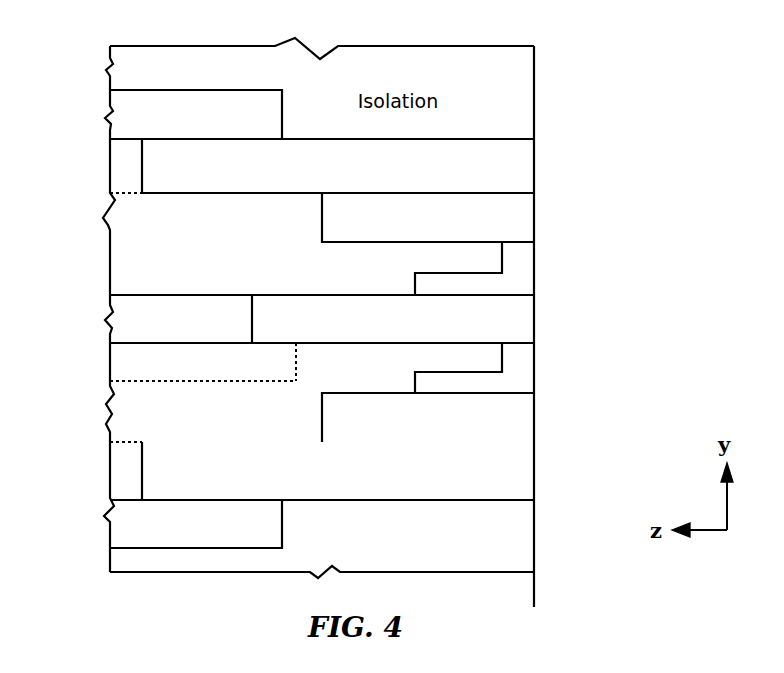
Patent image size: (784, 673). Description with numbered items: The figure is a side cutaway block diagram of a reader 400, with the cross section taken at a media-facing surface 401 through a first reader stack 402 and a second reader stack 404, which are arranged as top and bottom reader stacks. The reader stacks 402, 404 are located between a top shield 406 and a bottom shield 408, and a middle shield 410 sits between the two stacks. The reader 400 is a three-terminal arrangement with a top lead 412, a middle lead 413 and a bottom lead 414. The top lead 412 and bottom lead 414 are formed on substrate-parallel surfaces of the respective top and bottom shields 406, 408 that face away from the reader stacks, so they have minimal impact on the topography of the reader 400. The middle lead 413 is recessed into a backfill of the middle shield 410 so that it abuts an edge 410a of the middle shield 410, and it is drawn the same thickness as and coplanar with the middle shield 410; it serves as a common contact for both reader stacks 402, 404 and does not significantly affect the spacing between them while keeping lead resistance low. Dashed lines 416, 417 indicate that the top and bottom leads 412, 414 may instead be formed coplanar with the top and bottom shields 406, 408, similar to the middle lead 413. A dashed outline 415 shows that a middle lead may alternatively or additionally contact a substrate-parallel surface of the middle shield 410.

The reader 400 is at (578, 56).
The media-facing surface 401 is at (534, 598).
The first reader stack 402 is at (548, 195).
The second reader stack 404 is at (548, 344).
The top shield 406 is at (524, 164).
The bottom shield 408 is at (520, 472).
The middle shield 410 is at (524, 315).
The edge of the middle shield 410a is at (252, 326).
The top lead 412 is at (128, 118).
The middle lead 413 is at (122, 330).
The bottom lead 414 is at (128, 526).
The dashed outline 415 is at (122, 382).
The dashed line 416 is at (115, 200).
The dashed line 417 is at (128, 440).